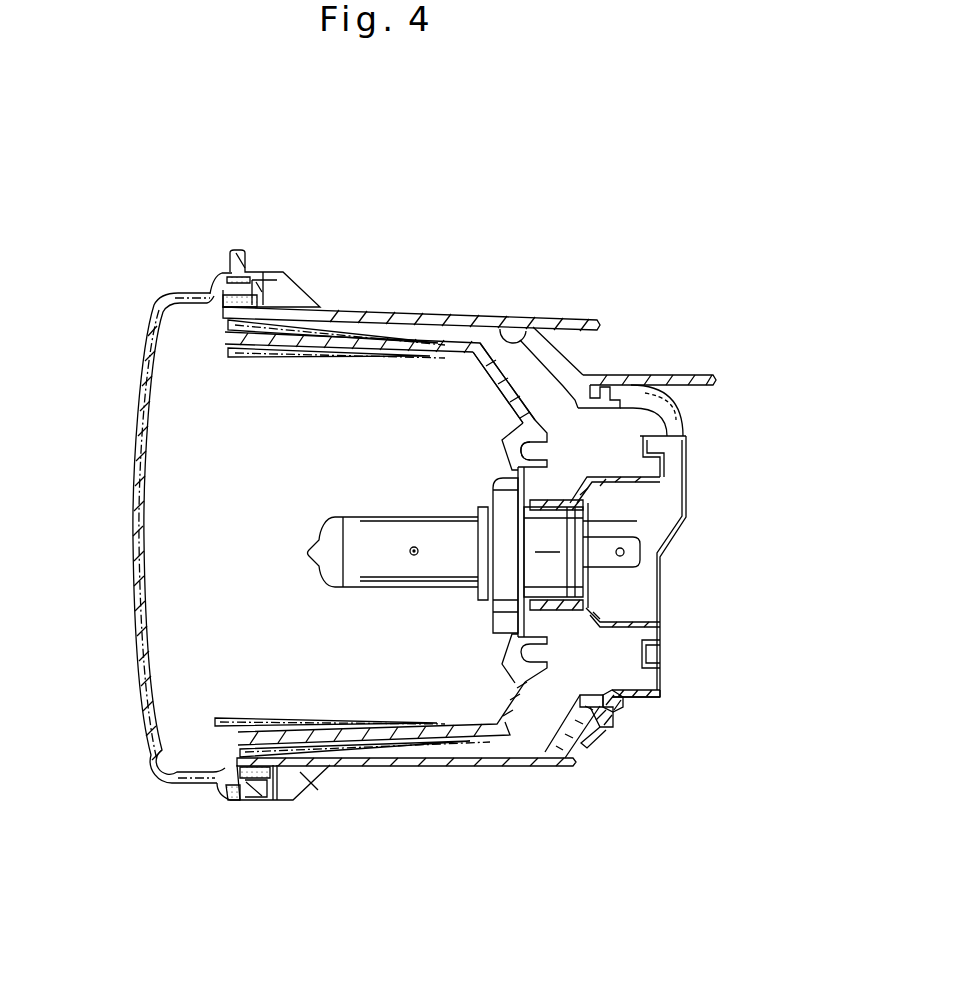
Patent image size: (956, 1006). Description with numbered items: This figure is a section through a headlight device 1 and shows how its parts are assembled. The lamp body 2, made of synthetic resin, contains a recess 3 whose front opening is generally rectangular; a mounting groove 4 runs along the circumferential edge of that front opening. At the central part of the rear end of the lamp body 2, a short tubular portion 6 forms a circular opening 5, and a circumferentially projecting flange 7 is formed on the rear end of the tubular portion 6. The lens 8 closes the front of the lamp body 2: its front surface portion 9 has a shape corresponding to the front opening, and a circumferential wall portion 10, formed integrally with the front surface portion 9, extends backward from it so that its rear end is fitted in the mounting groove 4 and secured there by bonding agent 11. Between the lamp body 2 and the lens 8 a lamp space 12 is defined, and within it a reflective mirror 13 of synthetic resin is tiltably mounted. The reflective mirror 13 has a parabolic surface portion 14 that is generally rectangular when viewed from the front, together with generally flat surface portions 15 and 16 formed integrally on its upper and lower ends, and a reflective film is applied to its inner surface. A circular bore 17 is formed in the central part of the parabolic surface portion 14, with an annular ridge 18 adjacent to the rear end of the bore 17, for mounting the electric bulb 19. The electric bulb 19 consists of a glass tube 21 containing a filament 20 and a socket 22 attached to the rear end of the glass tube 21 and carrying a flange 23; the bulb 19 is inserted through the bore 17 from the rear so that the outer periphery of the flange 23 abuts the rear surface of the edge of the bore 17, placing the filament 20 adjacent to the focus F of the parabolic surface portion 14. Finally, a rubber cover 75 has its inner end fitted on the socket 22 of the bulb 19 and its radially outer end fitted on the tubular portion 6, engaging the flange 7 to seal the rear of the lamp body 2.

The headlamp 1 is at (695, 196).
The lamp body 2 is at (398, 306).
The recess 3 is at (497, 323).
The mounting groove 4 is at (249, 272).
The circular opening 5 is at (588, 710).
The tubular portion 6 is at (593, 727).
The flange 7 is at (613, 720).
The lens 8 is at (140, 394).
The front surface portion 9 is at (139, 430).
The circumferential wall portion 10 is at (181, 292).
The bonding agent 11 is at (208, 293).
The lamp space 12 is at (216, 520).
The reflective mirror 13 is at (496, 378).
The parabolic surface portion 14 is at (501, 400).
The flat surface portion 15 is at (229, 360).
The flat surface portion 16 is at (236, 720).
The circular bore 17 is at (498, 477).
The annular ridge 18 is at (542, 460).
The electric bulb 19 is at (311, 487).
The filament 20 is at (416, 545).
The glass tube 21 is at (354, 522).
The socket 22 is at (549, 575).
The flange 23 is at (503, 612).
The rubber cover 75 is at (660, 697).